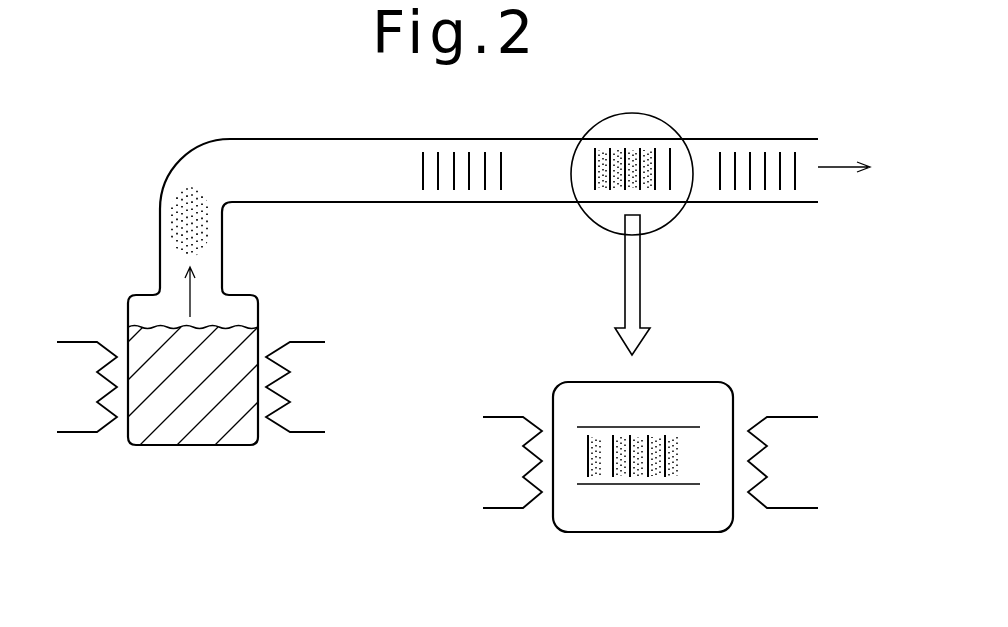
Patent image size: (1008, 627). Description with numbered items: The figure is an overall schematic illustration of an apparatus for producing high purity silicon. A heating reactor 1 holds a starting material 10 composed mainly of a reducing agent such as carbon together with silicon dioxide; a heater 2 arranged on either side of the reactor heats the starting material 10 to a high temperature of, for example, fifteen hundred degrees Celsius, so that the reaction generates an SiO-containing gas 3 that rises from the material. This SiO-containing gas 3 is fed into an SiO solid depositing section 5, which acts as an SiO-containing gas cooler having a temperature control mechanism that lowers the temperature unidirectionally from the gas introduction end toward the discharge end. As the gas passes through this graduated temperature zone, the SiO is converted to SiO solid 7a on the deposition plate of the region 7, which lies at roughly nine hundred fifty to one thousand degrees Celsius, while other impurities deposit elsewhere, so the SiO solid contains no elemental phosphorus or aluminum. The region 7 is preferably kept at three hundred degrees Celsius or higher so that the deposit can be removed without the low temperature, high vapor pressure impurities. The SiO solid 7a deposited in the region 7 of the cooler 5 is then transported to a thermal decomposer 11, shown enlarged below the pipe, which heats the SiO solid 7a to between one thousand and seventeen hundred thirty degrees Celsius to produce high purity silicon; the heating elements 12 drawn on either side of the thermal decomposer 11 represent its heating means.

The heating reactor 1 is at (116, 304).
The heater 2 is at (310, 371).
The SiO-containing gas 3 is at (207, 222).
The SiO solid depositing section 5 is at (530, 139).
The region 7 is at (673, 131).
The SiO solid 7a is at (640, 470).
The starting material 10 is at (203, 436).
The thermal decomposer 11 is at (664, 519).
The substrate heater 12 is at (796, 431).